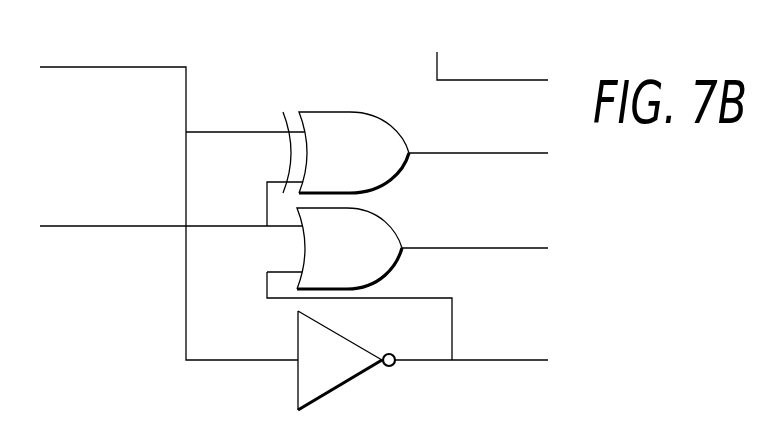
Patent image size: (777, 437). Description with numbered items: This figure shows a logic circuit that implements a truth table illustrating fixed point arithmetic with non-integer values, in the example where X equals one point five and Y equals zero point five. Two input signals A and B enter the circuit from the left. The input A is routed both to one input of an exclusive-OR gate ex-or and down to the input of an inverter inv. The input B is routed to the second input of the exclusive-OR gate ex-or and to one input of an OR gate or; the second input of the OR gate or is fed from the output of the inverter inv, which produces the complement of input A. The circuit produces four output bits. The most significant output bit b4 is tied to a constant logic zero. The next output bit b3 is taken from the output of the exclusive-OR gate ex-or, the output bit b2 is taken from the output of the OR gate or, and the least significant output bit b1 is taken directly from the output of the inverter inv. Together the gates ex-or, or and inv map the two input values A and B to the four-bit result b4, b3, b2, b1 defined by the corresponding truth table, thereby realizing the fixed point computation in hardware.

The input signal A is at (167, 194).
The input signal B is at (167, 226).
The exclusive-OR gate ex-or is at (367, 150).
The OR gate or is at (360, 243).
The inverter inv is at (359, 341).
The output bit b4 (constant 0) b4 is at (478, 80).
The output bit b3 (ex-or output) b3 is at (519, 153).
The output bit b2 (or output) b2 is at (522, 250).
The output bit b1 (inverter output) b1 is at (515, 360).